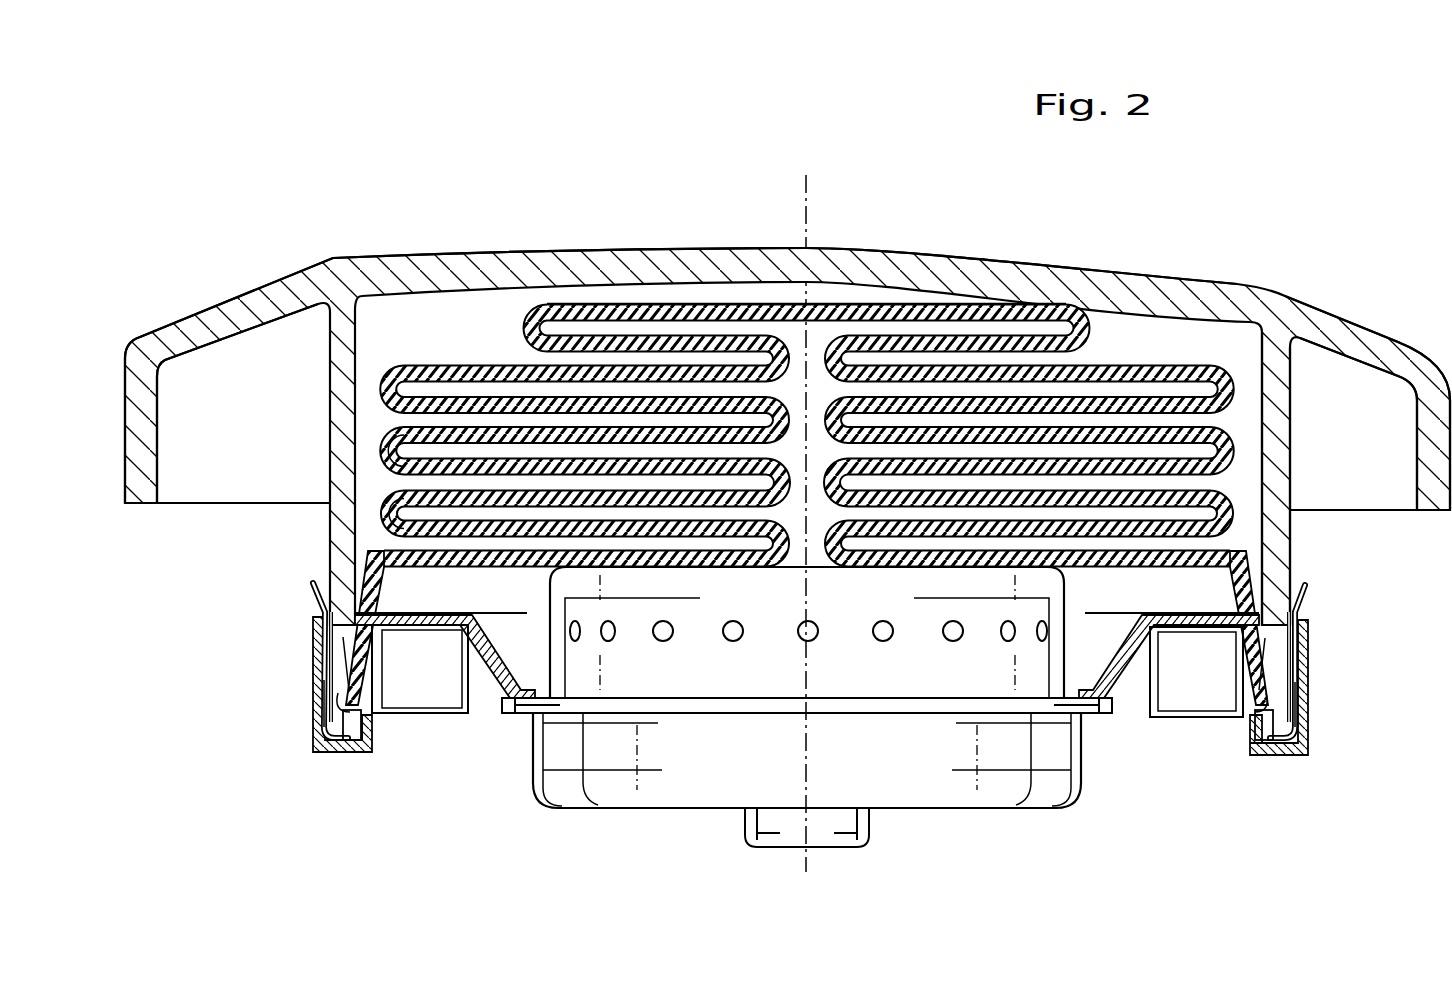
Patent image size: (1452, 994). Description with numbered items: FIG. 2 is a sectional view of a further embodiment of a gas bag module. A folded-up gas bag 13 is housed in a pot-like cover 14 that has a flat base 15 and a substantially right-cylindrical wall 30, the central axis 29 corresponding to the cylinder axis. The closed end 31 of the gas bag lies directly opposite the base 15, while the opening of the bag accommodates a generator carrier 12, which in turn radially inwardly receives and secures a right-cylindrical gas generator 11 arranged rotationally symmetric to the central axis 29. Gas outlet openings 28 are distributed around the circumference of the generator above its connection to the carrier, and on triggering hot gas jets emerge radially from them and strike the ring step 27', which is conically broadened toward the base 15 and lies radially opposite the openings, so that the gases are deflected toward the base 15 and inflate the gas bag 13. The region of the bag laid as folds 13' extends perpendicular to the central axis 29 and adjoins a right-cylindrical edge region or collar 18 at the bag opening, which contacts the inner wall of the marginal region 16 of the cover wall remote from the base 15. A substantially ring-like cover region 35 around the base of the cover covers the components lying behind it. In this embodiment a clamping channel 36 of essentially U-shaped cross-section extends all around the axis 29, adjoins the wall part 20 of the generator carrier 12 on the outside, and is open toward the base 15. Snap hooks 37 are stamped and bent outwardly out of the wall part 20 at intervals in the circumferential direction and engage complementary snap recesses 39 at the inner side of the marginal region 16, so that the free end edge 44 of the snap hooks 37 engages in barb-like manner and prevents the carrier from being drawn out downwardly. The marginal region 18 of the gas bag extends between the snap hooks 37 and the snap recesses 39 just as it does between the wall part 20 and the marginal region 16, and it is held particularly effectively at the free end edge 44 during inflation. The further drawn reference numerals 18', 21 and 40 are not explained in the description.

The gas generator 11 is at (885, 742).
The generator carrier 12 is at (483, 684).
The gas bag 13 is at (807, 450).
The folds 13' is at (429, 411).
The pot-like cover 14 is at (939, 247).
The base 15 is at (615, 262).
The marginal region of the cover 16 is at (322, 608).
The edge region or collar of the gas bag 18 is at (813, 667).
The contact spring leg 18' is at (809, 688).
The wall part 20 is at (378, 722).
The connecting blade 21 is at (352, 742).
The ring step 27' is at (807, 633).
The gas outlet openings 28 is at (667, 634).
The central axis 29 is at (828, 185).
The wall 30 is at (1291, 440).
The closed end of the gas bag 31 is at (710, 304).
The ring-like cover region 35 is at (212, 300).
The clamping channel 36 is at (316, 732).
The snap hooks 37 is at (433, 680).
The snap recesses 39 is at (343, 637).
The socket base 40 is at (1244, 730).
The free end edge 44 is at (343, 694).